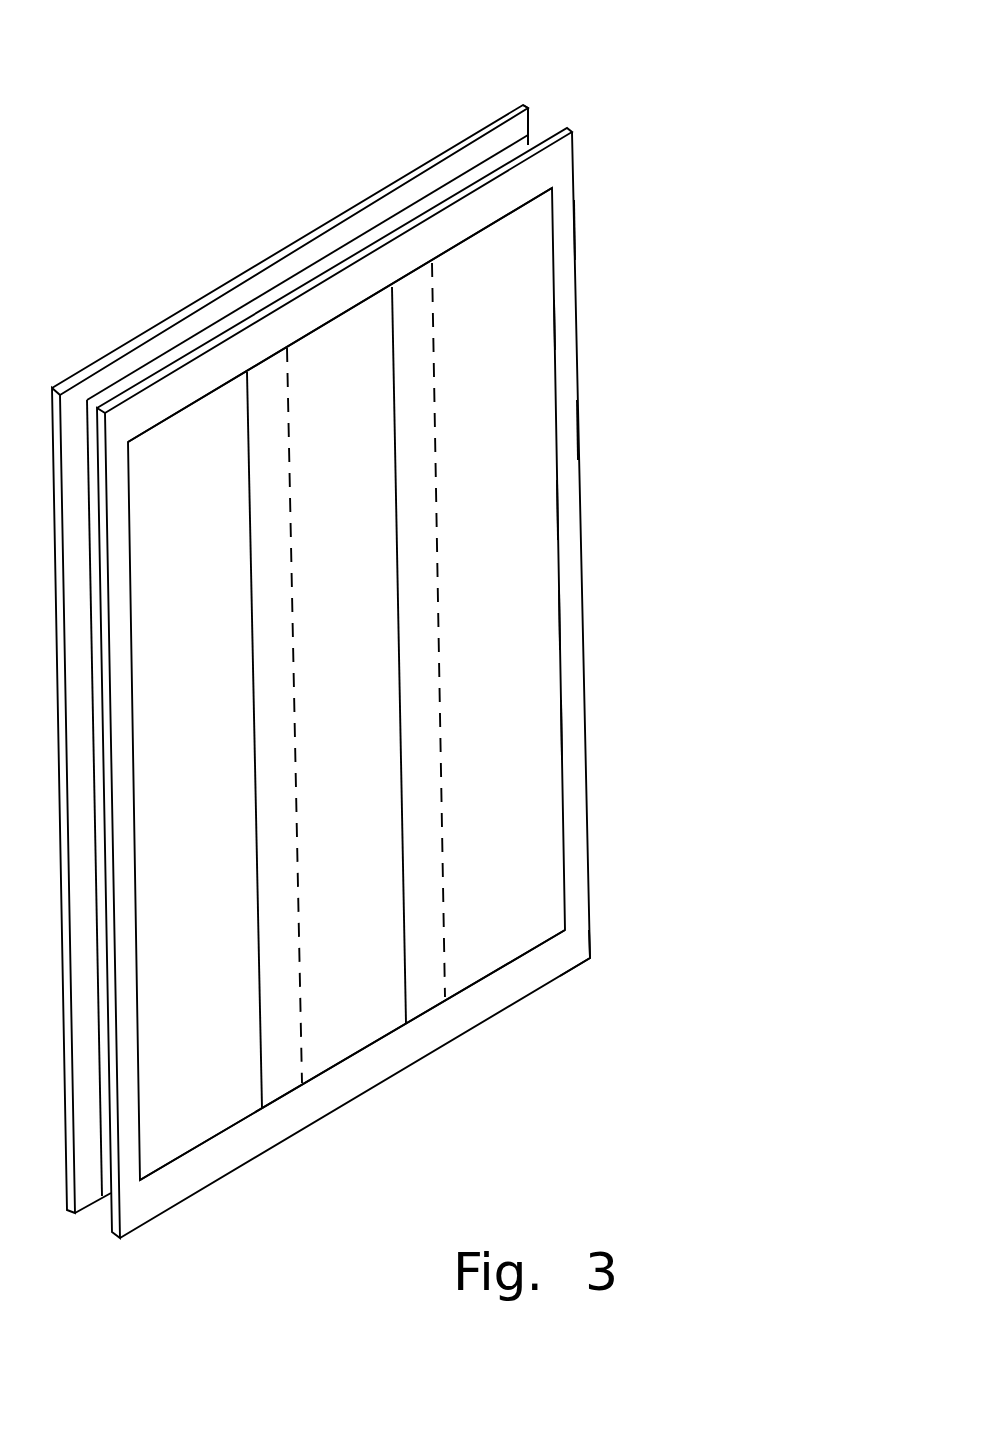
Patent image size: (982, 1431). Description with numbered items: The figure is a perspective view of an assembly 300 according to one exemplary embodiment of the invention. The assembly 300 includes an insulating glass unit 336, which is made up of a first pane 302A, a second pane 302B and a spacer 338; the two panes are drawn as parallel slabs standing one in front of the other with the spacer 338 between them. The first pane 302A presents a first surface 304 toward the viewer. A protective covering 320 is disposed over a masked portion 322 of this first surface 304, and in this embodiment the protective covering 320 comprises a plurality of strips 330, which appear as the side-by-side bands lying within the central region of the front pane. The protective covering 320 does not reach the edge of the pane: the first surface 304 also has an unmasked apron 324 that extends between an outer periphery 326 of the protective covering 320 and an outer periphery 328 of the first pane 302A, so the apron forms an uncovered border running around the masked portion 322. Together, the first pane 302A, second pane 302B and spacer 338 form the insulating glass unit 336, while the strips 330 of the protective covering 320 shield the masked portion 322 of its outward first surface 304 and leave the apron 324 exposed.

The assembly 300 is at (394, 691).
The first pane 302A is at (590, 858).
The second pane 302B is at (147, 327).
The first surface 304 is at (569, 510).
The protective covering 320 is at (567, 727).
The masked portion 322 is at (564, 610).
The unmasked apron 324 is at (571, 423).
The outer periphery of protective covering 326 is at (553, 325).
The outer periphery of first pane 328 is at (577, 232).
The strips 330 is at (335, 322).
The insulating glass unit 336 is at (591, 962).
The spacer 338 is at (513, 148).